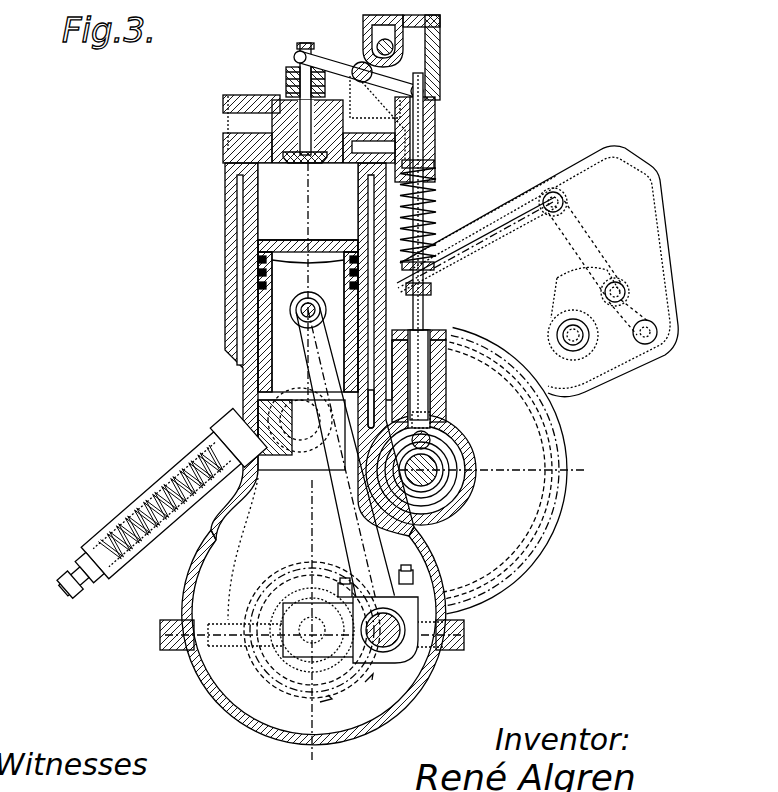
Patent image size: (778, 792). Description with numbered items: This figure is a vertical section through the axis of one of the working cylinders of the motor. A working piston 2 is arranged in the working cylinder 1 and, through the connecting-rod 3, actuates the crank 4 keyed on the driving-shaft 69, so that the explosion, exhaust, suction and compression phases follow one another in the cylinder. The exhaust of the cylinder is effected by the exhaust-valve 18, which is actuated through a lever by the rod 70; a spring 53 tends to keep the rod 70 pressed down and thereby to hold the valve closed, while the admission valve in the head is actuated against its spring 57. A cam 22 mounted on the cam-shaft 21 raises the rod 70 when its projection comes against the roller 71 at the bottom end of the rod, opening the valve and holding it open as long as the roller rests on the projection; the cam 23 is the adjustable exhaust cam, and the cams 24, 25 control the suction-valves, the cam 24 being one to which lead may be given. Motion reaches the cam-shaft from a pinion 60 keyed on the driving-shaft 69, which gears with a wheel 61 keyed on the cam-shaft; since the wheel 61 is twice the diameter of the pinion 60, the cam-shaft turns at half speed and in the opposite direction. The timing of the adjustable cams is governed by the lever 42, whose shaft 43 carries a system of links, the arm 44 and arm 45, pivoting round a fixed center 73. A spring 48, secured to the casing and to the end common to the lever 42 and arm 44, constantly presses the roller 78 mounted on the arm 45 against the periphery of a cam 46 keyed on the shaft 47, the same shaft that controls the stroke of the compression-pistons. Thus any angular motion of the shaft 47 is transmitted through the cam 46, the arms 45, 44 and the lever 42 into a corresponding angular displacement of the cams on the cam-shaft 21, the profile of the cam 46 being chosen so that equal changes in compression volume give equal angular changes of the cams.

The working cylinder 1 is at (312, 380).
The working piston 2 is at (292, 244).
The connecting-rod 3 is at (345, 468).
The crank 4 is at (313, 620).
The exhaust-valve 18 is at (315, 158).
The cam-shaft 21 is at (411, 512).
The exhaust cam 22 is at (440, 484).
The adjustable exhaust cam 23 is at (444, 454).
The suction cam 24 is at (450, 464).
The suction cam 25 is at (440, 505).
The lever 42 is at (373, 386).
The shaft 43 is at (302, 322).
The arm 44 is at (470, 248).
The arm 45 is at (592, 240).
The cam 46 is at (539, 271).
The shaft 47 is at (571, 338).
The spring 48 is at (160, 490).
The spring 53 is at (436, 200).
The spring 57 is at (331, 63).
The pinion 60 is at (314, 698).
The wheel 61 is at (505, 471).
The driving-shaft 69 is at (312, 625).
The rod 70 is at (428, 218).
The roller 71 is at (431, 436).
The fixed center 73 is at (641, 341).
The roller 78 is at (622, 292).